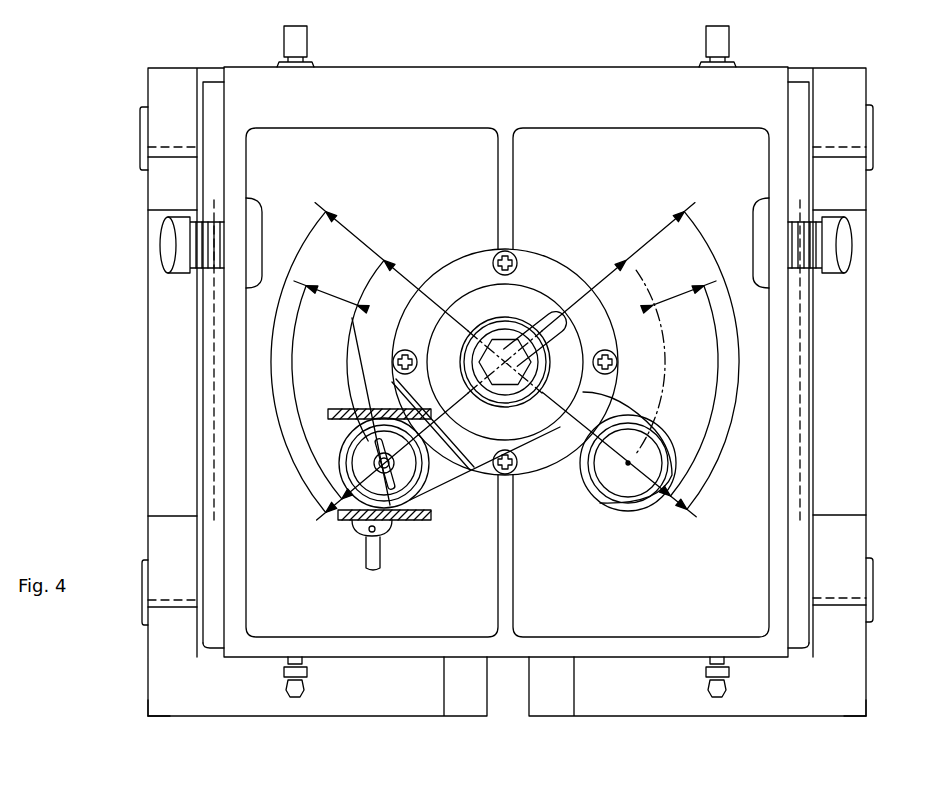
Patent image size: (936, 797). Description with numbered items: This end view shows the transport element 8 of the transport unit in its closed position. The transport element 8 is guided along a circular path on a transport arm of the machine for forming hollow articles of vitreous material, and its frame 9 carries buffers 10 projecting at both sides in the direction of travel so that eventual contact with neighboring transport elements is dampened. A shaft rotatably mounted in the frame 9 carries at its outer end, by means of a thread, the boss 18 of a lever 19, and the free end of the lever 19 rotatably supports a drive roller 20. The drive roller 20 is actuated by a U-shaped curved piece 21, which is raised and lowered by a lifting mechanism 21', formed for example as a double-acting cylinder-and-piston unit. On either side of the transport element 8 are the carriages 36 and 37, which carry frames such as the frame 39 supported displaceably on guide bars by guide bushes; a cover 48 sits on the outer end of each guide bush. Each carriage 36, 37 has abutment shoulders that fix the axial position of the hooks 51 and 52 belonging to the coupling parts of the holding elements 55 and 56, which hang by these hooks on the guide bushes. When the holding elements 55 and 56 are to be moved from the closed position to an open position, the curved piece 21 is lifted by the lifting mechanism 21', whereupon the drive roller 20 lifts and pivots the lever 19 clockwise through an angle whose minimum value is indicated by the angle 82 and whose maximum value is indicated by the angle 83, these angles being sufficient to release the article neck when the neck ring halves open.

The transport element 8 is at (404, 664).
The frame 9 is at (347, 660).
The buffers 10 is at (172, 278).
The boss 18 is at (565, 270).
The lever 19 is at (452, 476).
The drive roller 20 is at (428, 500).
The U-shaped curved piece 21 is at (374, 468).
The lifting mechanism 21' is at (392, 560).
The carriage 36 is at (212, 72).
The carriage 37 is at (798, 74).
The frame 39 is at (210, 645).
The cover 48 is at (140, 118).
The hooks 51 is at (160, 76).
The hooks 52 is at (832, 72).
The holding element 55 is at (140, 716).
The holding element 56 is at (874, 716).
The minimum pivot angle 82 is at (293, 357).
The maximum pivot angle 83 is at (274, 396).